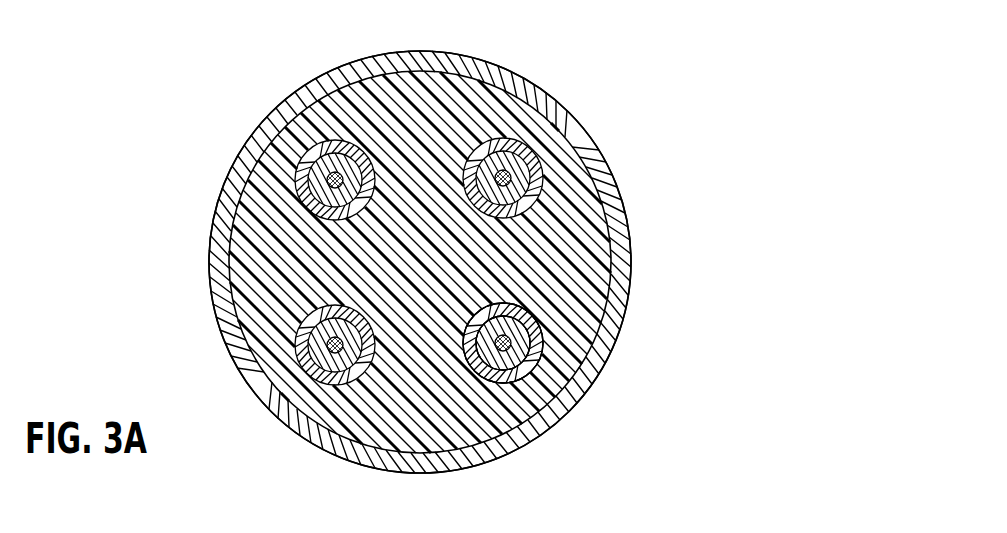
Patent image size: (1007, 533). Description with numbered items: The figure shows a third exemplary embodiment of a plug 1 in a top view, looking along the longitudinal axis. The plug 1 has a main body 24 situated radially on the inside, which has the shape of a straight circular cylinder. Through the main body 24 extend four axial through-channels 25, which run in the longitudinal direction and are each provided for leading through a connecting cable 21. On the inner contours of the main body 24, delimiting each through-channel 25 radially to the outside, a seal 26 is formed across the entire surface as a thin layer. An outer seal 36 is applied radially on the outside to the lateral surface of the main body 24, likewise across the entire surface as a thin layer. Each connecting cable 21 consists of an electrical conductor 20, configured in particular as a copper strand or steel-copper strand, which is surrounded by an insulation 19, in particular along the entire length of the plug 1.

The plug 1 is at (606, 93).
The outer seal 36 is at (618, 220).
The main body 24 is at (582, 266).
The insulation 19 is at (512, 432).
The electrical conductor 20 is at (548, 403).
The connecting cable 21 is at (547, 398).
The through-channel 25 is at (545, 362).
The seal 26 is at (546, 330).